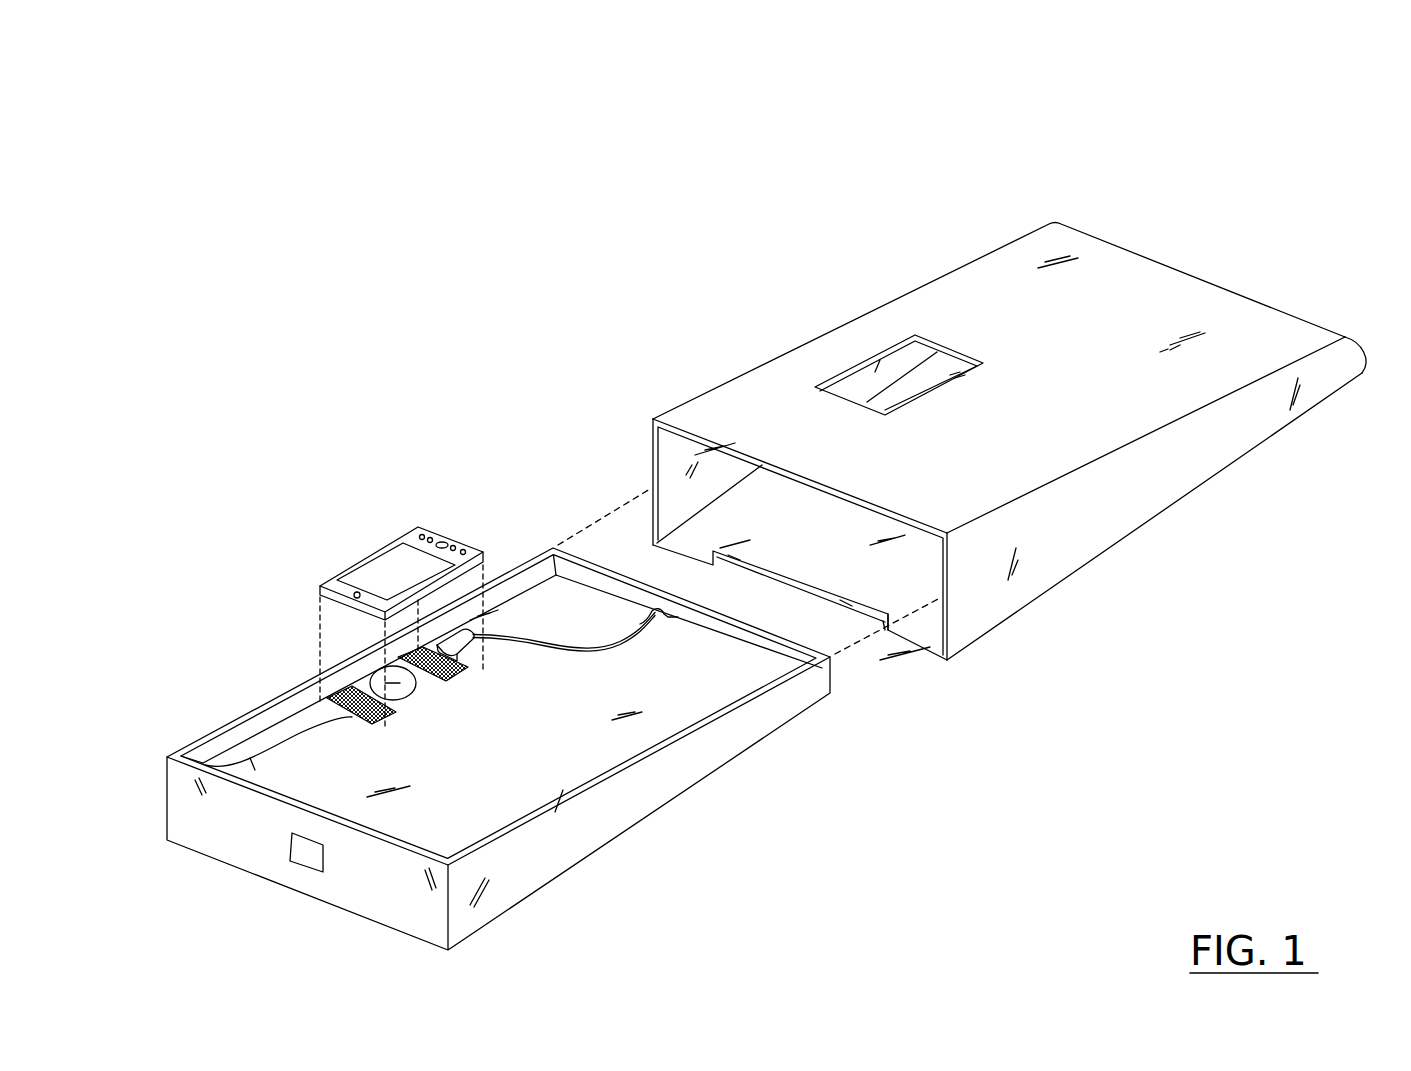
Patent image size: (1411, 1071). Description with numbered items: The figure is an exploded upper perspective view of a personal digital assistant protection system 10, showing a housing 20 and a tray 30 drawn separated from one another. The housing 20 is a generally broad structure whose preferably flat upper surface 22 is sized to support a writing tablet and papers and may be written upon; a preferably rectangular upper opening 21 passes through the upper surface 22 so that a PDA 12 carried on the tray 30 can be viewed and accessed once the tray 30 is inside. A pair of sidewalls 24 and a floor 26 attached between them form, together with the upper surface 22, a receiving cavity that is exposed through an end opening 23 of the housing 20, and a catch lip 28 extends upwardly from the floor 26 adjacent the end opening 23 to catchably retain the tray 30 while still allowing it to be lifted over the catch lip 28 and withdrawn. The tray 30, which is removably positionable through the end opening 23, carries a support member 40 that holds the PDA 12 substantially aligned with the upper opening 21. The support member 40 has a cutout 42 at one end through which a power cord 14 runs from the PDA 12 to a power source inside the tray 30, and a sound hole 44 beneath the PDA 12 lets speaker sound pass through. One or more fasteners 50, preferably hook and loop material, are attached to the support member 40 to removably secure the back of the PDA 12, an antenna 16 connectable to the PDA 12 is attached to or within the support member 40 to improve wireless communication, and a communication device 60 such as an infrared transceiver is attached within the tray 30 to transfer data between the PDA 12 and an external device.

The personal digital assistant protection system 10 is at (1291, 163).
The PDA 12 is at (383, 568).
The power cord 14 is at (513, 630).
The antenna 16 is at (233, 760).
The housing 20 is at (962, 246).
The upper opening 21 is at (820, 386).
The upper surface 22 is at (1072, 417).
The end opening 23 is at (997, 614).
The sidewalls 24 is at (668, 450).
The floor 26 is at (930, 637).
The catch lip 28 is at (873, 620).
The tray 30 is at (630, 848).
The support member 40 is at (508, 765).
The cutout 42 is at (655, 610).
The sound hole 44 is at (370, 680).
The fasteners 50 is at (323, 705).
The communication device 60 is at (312, 870).